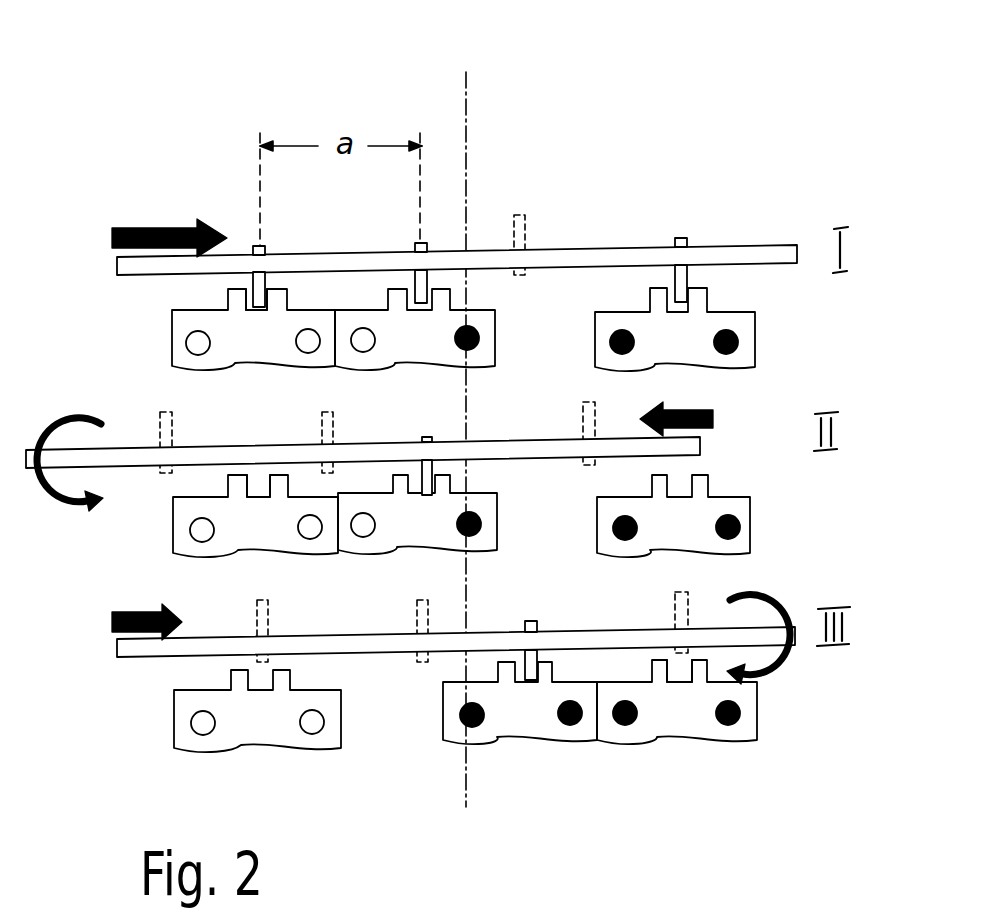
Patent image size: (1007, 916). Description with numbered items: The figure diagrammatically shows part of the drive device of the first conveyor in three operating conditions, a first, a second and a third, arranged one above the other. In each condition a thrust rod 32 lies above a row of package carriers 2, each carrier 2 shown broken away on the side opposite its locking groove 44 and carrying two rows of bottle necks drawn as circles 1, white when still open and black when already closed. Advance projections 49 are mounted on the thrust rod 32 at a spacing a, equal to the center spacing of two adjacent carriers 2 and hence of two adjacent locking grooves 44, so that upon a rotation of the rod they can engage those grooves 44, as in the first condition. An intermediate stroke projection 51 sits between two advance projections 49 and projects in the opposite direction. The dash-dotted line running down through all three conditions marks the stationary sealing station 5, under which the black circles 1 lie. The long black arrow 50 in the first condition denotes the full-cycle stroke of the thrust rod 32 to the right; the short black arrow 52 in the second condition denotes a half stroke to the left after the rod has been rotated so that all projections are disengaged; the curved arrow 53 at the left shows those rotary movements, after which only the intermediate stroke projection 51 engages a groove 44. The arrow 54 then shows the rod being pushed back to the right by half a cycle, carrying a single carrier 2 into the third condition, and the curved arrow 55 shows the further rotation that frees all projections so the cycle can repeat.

The holes 1 is at (196, 344).
The package carrier 2 is at (742, 323).
The sealing station 5 is at (467, 90).
The thrust rod 32 is at (592, 258).
The locking groove 44 is at (247, 297).
The advance projection 49 is at (266, 248).
The arrow 50 is at (140, 228).
The intermediate stroke projection 51 is at (520, 212).
The arrow 52 is at (697, 408).
The curved arrow 53 is at (64, 433).
The arrow 54 is at (136, 611).
The curved arrow 55 is at (768, 595).